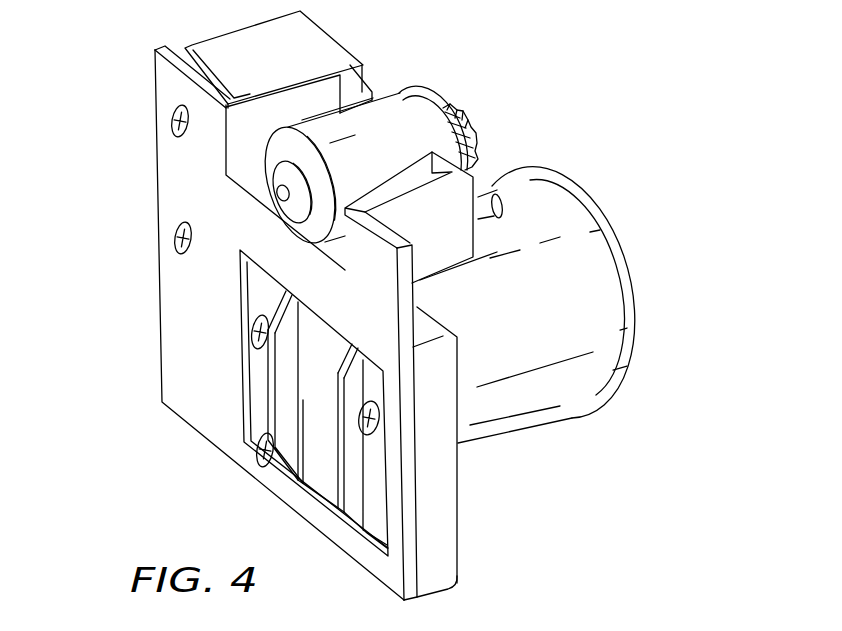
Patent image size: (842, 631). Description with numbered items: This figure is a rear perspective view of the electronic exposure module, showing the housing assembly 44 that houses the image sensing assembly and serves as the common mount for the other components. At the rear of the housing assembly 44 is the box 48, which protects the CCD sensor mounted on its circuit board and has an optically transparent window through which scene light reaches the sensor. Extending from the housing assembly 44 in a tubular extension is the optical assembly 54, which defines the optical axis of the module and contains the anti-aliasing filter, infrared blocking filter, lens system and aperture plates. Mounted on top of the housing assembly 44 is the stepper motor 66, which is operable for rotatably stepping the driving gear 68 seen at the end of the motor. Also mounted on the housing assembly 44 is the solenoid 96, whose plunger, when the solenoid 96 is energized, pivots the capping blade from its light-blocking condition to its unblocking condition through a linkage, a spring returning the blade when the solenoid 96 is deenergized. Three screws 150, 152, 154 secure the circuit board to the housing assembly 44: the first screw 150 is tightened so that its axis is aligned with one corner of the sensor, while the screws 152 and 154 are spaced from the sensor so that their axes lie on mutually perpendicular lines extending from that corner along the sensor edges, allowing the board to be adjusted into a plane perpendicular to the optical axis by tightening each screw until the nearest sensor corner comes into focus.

The housing assembly 44 is at (173, 77).
The box 48 is at (440, 563).
The optical assembly 54 is at (643, 294).
The stepper motor 66 is at (390, 102).
The driving gear 68 is at (463, 121).
The solenoid 96 is at (308, 48).
The screw 150 is at (250, 326).
The screw 152 is at (258, 462).
The screw 154 is at (362, 432).